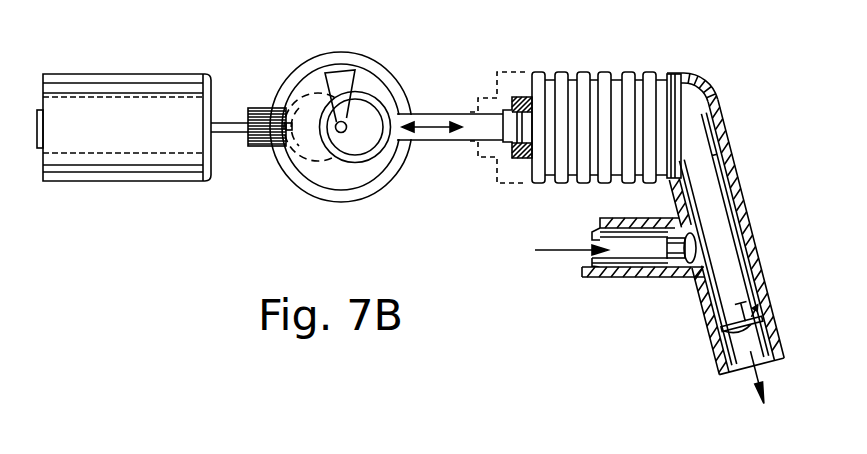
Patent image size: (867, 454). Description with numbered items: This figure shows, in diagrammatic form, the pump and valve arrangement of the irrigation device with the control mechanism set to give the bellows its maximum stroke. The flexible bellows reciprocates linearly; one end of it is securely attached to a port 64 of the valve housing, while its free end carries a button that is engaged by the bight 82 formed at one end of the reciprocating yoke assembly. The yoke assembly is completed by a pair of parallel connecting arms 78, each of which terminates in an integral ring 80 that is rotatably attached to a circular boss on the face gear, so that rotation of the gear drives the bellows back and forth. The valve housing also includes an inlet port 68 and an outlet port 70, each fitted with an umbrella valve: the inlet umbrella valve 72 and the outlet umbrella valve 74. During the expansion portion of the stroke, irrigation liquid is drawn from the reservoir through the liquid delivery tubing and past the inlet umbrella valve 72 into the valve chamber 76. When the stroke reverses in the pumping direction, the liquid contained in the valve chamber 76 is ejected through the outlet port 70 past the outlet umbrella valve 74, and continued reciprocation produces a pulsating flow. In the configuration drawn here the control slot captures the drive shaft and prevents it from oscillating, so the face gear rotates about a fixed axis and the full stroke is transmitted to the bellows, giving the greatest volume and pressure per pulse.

The port 64 is at (703, 78).
The inlet port 68 is at (678, 266).
The outlet port 70 is at (752, 302).
The inlet umbrella valve 72 is at (704, 247).
The outlet umbrella valve 74 is at (757, 336).
The valve chamber 76 is at (707, 160).
The connecting arms 78 is at (461, 145).
The ring 80 is at (376, 96).
The bight 82 is at (371, 117).